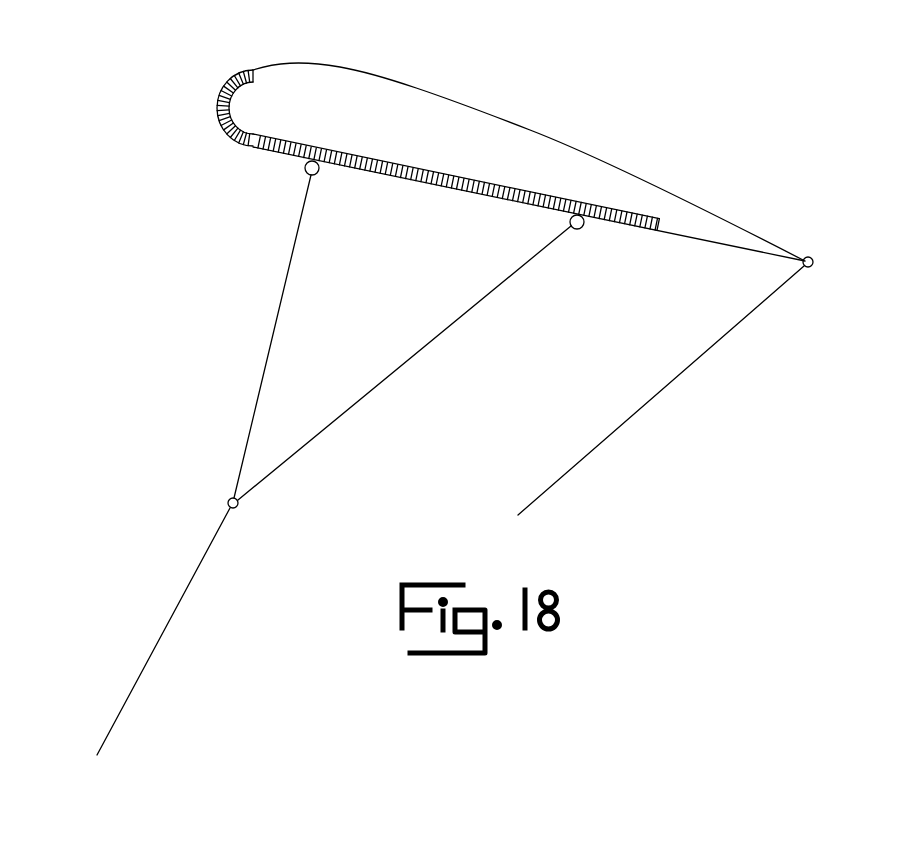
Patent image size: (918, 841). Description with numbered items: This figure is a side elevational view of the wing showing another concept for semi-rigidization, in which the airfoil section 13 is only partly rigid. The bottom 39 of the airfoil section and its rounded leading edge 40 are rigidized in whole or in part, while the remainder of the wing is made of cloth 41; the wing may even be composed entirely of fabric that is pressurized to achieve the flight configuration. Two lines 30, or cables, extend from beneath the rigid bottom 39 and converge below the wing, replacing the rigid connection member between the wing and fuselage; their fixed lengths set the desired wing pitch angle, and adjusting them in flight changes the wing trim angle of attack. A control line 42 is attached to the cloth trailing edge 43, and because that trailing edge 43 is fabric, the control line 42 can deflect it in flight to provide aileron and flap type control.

The airfoil section 13 is at (466, 146).
The lines 30 is at (277, 331).
The bottom 39 is at (455, 190).
The rounded leading edge 40 is at (216, 112).
The cloth 41 is at (527, 137).
The control line 42 is at (650, 405).
The trailing edge 43 is at (801, 254).